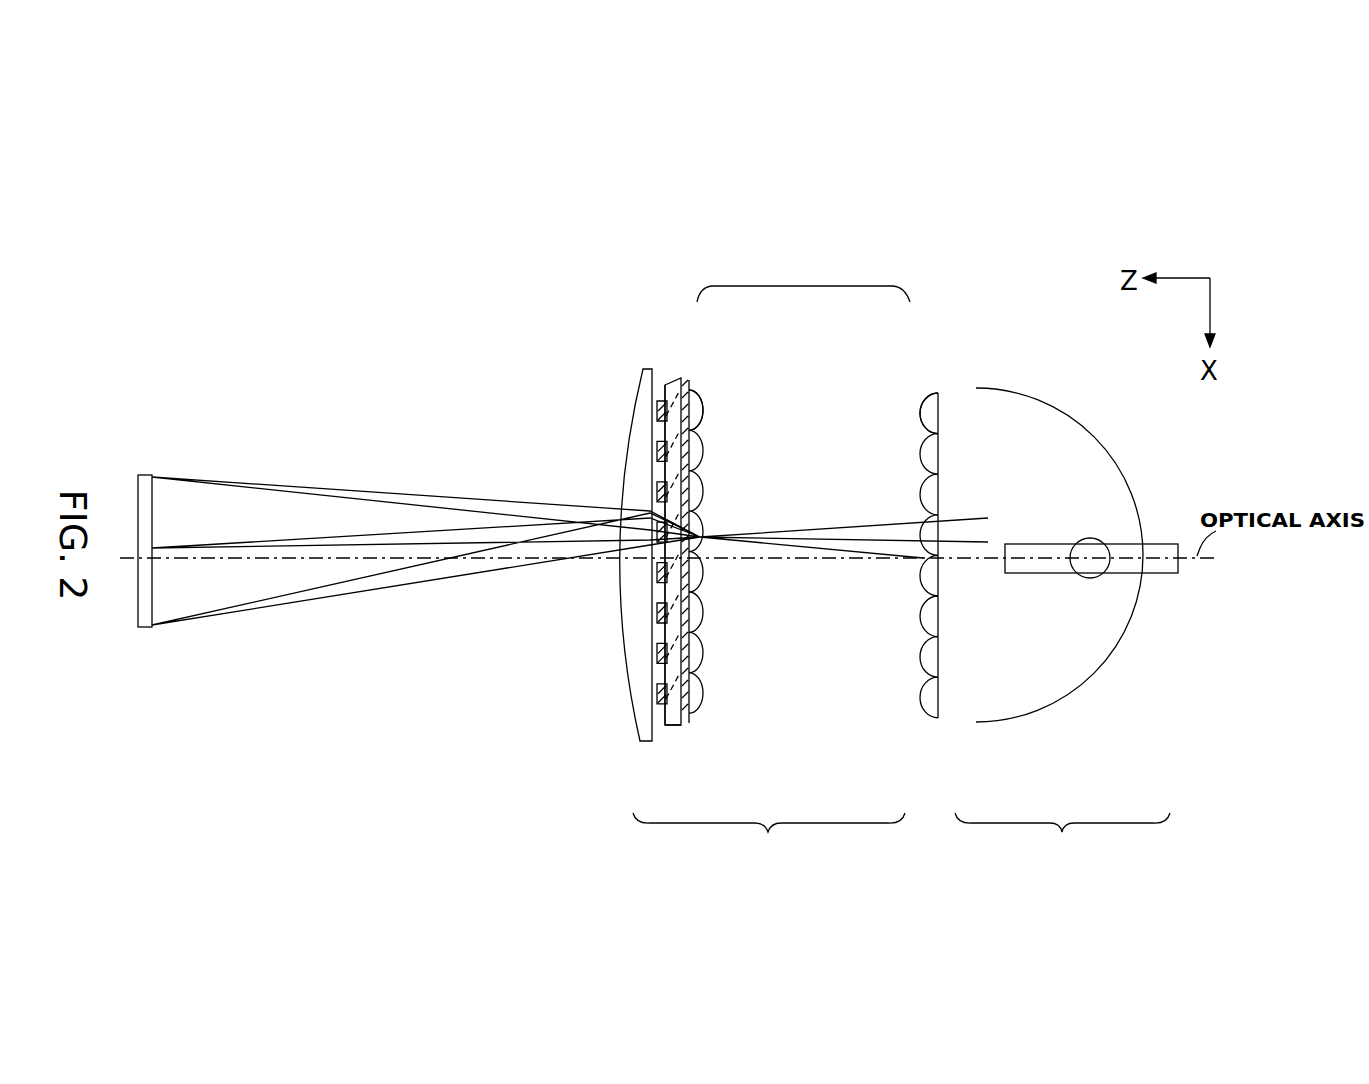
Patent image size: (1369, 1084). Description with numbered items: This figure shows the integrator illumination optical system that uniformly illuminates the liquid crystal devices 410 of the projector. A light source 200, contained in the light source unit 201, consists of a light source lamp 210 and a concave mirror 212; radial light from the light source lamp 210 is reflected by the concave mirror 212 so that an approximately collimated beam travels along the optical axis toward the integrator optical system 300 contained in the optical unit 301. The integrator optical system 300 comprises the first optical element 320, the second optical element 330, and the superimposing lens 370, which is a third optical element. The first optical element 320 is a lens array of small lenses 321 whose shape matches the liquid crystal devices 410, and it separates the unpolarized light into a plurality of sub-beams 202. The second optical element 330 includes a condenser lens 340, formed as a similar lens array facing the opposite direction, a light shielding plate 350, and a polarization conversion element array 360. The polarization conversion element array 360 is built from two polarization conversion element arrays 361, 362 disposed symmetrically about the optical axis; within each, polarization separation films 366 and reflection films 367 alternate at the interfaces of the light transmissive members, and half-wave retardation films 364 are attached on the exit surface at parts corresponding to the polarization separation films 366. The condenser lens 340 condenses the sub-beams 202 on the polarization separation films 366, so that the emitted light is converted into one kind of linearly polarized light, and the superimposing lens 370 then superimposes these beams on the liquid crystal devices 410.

The light source 200 is at (1086, 536).
The light source unit 201 is at (1062, 844).
The sub-beams 202 is at (818, 527).
The light source lamp 210 is at (1098, 578).
The concave mirror 212 is at (1090, 455).
The integrator optical system 300 is at (840, 222).
The optical unit 301 is at (769, 842).
The first optical element 320 is at (938, 395).
The small lenses 321 is at (926, 412).
The second optical element 330 is at (790, 285).
The condenser lens 340 is at (696, 408).
The light shielding plate 350 is at (700, 402).
The polarization conversion element array 360 is at (685, 374).
The polarization conversion element array 361 is at (667, 373).
The polarization conversion element array 362 is at (678, 735).
The λ/2 retardation films 364 is at (650, 456).
The polarization separation film 366 is at (692, 673).
The reflection film 367 is at (690, 710).
The superimposing lens 370 is at (636, 408).
The liquid crystal devices 410 is at (148, 625).